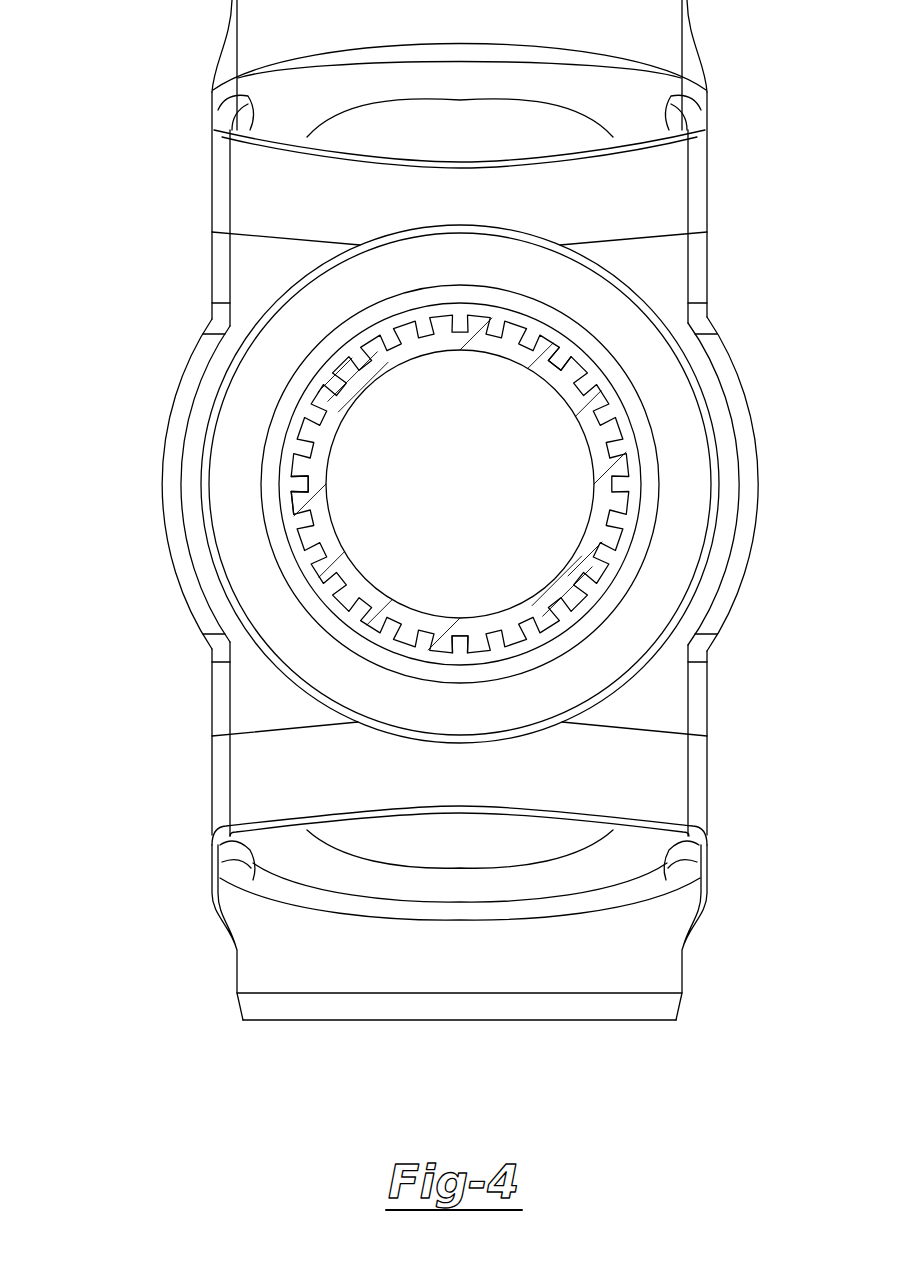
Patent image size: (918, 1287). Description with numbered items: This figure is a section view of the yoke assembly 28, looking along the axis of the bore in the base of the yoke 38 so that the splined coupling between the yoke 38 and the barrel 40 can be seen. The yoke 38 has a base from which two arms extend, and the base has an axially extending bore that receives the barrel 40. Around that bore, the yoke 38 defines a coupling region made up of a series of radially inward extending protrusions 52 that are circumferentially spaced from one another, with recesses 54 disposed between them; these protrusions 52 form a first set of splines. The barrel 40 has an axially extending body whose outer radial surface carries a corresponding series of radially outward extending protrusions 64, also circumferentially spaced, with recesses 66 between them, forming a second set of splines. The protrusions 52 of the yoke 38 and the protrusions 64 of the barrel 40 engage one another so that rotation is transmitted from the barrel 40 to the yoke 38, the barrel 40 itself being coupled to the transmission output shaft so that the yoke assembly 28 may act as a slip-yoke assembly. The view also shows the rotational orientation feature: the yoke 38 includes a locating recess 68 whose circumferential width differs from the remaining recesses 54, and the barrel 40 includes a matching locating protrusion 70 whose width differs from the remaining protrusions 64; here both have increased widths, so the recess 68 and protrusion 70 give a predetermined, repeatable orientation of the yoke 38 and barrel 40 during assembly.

The yoke assembly 28 is at (141, 236).
The yoke 38 is at (712, 214).
The barrel 40 is at (455, 325).
The protrusions 52 is at (543, 368).
The recesses 54 is at (562, 358).
The protrusions 64 is at (298, 489).
The recesses 66 is at (300, 508).
The locating recess 68 is at (465, 650).
The locating protrusion 70 is at (460, 615).